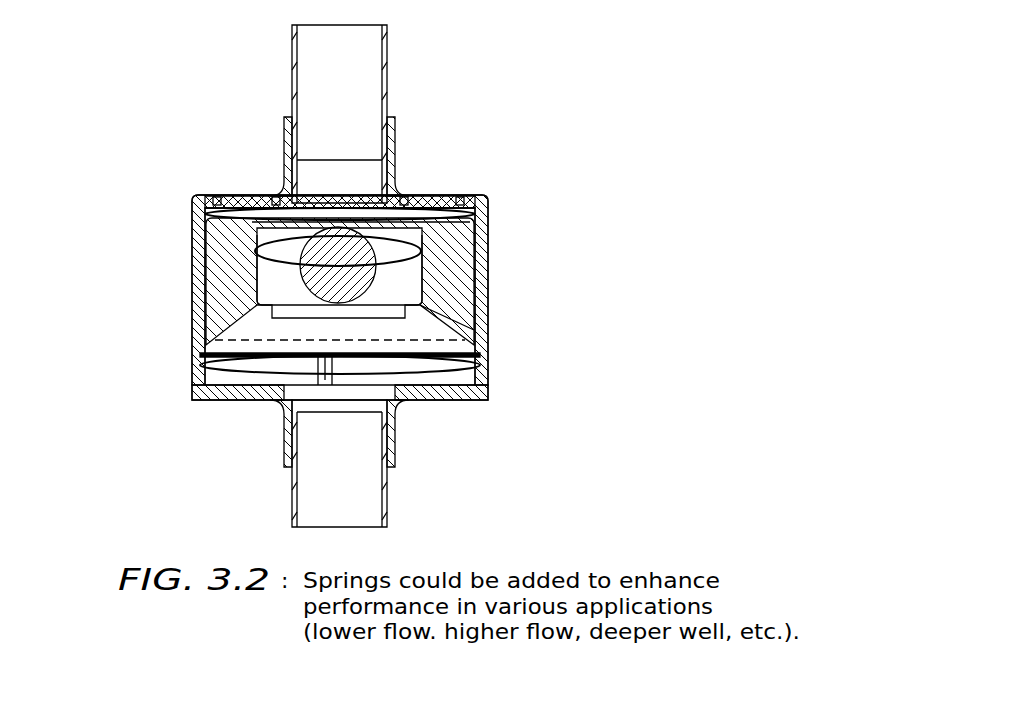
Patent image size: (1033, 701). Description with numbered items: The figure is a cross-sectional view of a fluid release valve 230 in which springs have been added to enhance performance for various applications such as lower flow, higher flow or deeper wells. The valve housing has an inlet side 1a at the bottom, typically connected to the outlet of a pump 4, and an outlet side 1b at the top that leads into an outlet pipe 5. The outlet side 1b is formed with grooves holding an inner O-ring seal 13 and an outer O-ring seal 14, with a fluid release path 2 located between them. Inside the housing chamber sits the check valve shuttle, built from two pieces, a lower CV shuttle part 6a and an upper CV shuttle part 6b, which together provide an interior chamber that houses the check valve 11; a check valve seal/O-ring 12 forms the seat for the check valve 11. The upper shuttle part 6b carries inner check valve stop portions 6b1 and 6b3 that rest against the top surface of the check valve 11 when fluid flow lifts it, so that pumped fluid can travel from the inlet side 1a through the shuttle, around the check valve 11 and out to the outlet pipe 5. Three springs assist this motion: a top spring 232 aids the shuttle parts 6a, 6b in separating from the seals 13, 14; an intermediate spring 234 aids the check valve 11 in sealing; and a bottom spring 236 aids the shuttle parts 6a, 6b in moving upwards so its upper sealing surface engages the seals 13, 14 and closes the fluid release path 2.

The fluid release valve 230 is at (106, 138).
The outlet pipe 5 is at (387, 44).
The outlet side 1b is at (284, 118).
The fluid release path 2 is at (235, 198).
The inner O-ring seal 13 is at (276, 200).
The outer O-ring seal 14 is at (200, 195).
The top spring 232 is at (430, 209).
The inner check valve stop portion 6b3 is at (455, 218).
The intermediate spring 234 is at (428, 252).
The inner check valve stop portion 6b1 is at (265, 283).
The CV shuttle part 6b is at (222, 300).
The check valve 11 is at (474, 303).
The check valve seal/O-ring 12 is at (474, 328).
The CV shuttle part 6a is at (252, 330).
The inlet side 1a is at (284, 440).
The pump 4 is at (292, 510).
The bottom spring 236 is at (543, 450).